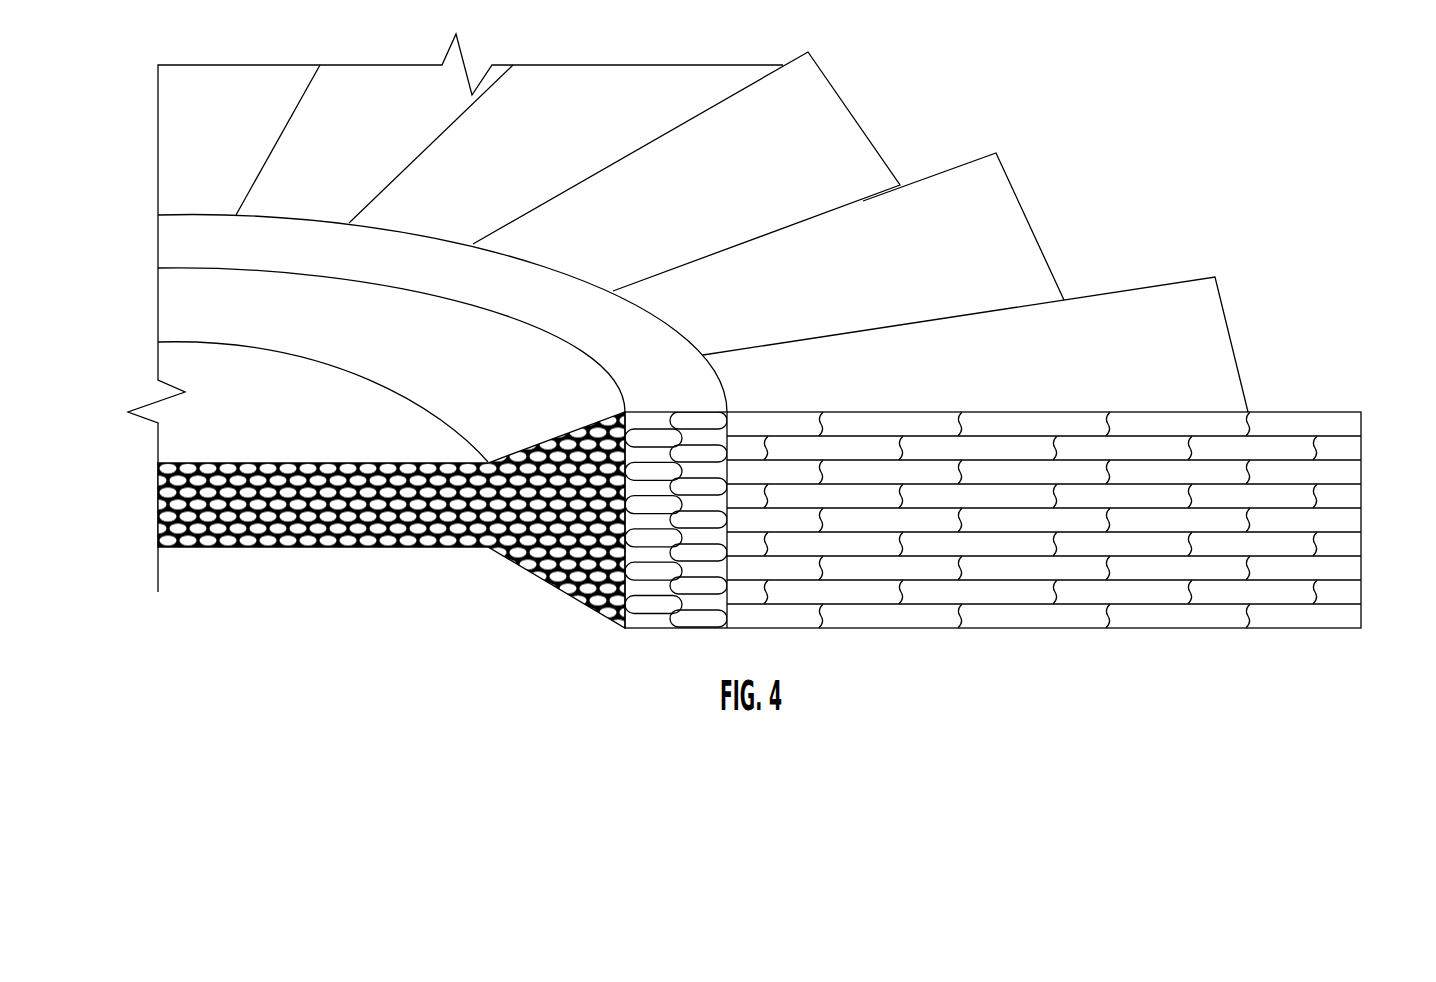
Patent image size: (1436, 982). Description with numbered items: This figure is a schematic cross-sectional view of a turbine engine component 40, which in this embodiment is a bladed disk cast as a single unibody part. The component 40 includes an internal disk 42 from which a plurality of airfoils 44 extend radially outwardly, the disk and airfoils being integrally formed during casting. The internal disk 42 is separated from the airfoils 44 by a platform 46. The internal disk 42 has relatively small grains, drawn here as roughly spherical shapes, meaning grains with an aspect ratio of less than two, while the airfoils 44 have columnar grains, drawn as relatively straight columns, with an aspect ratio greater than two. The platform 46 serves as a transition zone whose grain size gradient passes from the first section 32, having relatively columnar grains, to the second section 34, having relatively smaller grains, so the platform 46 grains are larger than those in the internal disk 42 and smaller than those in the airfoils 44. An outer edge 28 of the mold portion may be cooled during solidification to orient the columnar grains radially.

The outer edge 28 is at (1030, 581).
The first section 32 is at (1065, 640).
The second section 34 is at (402, 519).
The turbine engine component 40 is at (1114, 200).
The internal disk 42 is at (198, 388).
The airfoils 44 is at (1173, 313).
The platform 46 is at (188, 245).